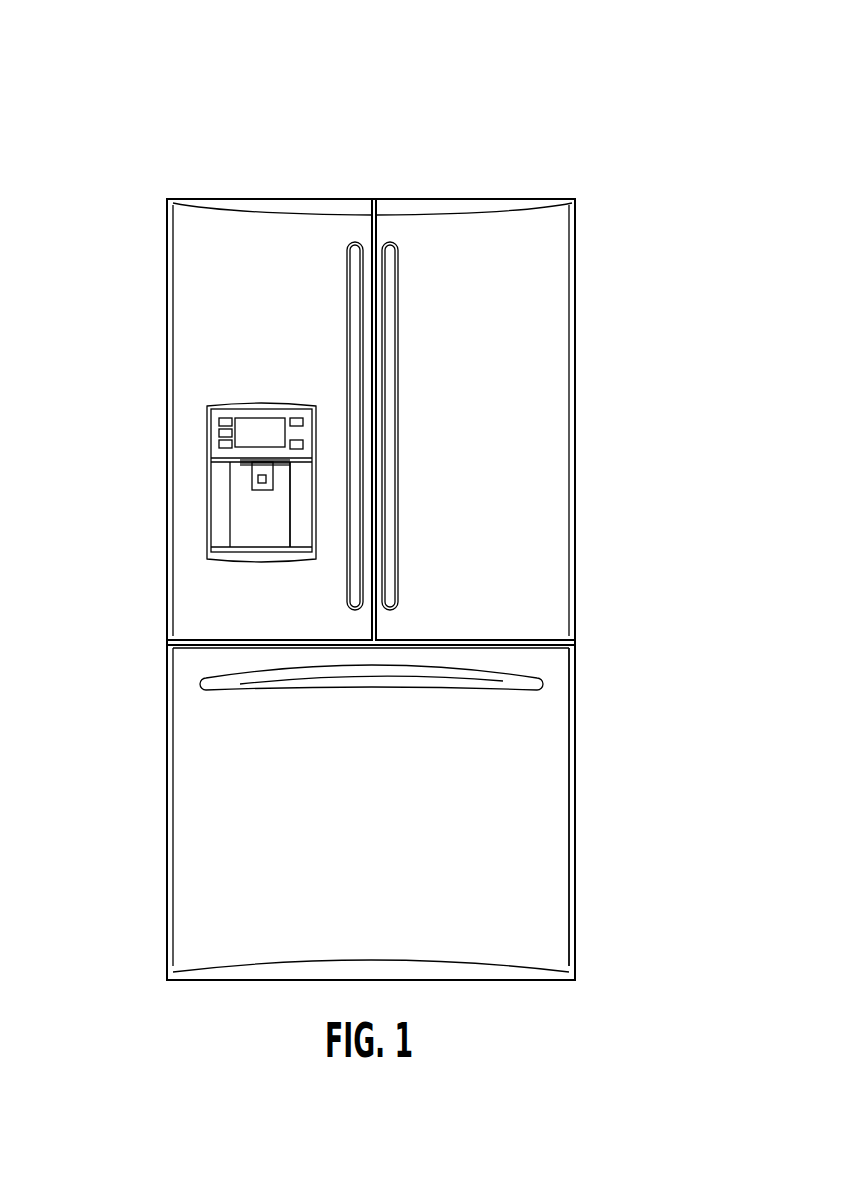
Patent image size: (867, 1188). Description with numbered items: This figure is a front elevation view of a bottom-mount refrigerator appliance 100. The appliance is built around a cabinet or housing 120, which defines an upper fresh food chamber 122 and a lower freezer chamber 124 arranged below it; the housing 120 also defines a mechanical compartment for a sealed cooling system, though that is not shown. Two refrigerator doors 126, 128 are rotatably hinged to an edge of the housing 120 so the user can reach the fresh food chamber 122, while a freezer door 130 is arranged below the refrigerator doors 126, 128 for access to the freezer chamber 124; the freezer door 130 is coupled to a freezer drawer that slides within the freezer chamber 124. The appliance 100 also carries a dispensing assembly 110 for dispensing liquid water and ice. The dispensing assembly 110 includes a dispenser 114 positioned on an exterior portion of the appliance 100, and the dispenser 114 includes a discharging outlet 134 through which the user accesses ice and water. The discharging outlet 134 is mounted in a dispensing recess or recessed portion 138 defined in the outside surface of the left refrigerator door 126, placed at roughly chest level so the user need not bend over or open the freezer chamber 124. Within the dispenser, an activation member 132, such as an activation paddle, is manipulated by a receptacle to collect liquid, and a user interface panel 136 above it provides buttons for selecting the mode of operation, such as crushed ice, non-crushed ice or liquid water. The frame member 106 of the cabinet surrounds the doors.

The refrigerator appliance 100 is at (523, 118).
The cabinet 106 is at (576, 199).
The dispensing assembly 110 is at (226, 387).
The dispenser 114 is at (262, 538).
The cabinet or housing 120 is at (190, 792).
The fresh food chamber 122 is at (537, 545).
The freezer chamber 124 is at (560, 681).
The refrigerator door 126 is at (202, 258).
The refrigerator door 128 is at (542, 285).
The freezer door 130 is at (558, 793).
The activation member 132 is at (257, 470).
The discharging outlet 134 is at (245, 466).
The user interface panel 136 is at (216, 443).
The dispensing recess or recessed portion 138 is at (287, 548).